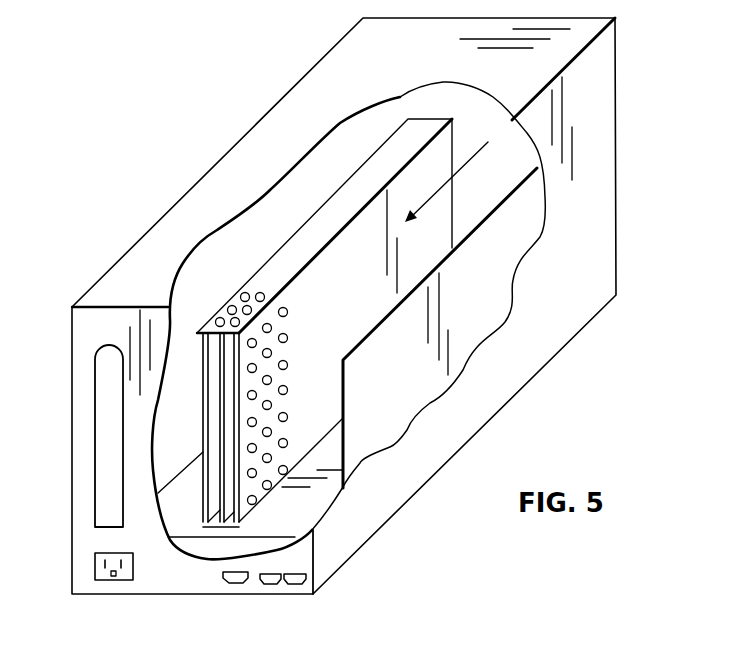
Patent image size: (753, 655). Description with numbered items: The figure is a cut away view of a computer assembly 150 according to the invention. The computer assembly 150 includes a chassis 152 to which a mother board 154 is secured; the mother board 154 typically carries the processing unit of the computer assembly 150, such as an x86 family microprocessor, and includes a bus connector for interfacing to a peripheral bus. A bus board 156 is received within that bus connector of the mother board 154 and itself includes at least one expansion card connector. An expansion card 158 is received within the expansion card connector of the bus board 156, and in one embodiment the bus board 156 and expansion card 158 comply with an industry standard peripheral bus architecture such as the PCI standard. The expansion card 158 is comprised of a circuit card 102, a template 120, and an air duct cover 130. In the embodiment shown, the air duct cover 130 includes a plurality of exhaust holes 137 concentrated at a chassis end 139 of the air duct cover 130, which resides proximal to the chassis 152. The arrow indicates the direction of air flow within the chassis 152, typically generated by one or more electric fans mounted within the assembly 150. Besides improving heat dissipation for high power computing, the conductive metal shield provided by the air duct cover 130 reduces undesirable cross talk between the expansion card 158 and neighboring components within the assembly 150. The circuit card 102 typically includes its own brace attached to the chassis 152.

The circuit card 102 is at (200, 369).
The template 120 is at (203, 507).
The air duct cover 130 is at (283, 290).
The exhaust holes 137 is at (288, 313).
The chassis end 139 is at (240, 415).
The computer assembly 150 is at (241, 100).
The chassis 152 is at (618, 60).
The mother board 154 is at (395, 391).
The bus board 156 is at (312, 522).
The expansion card 158 is at (287, 237).